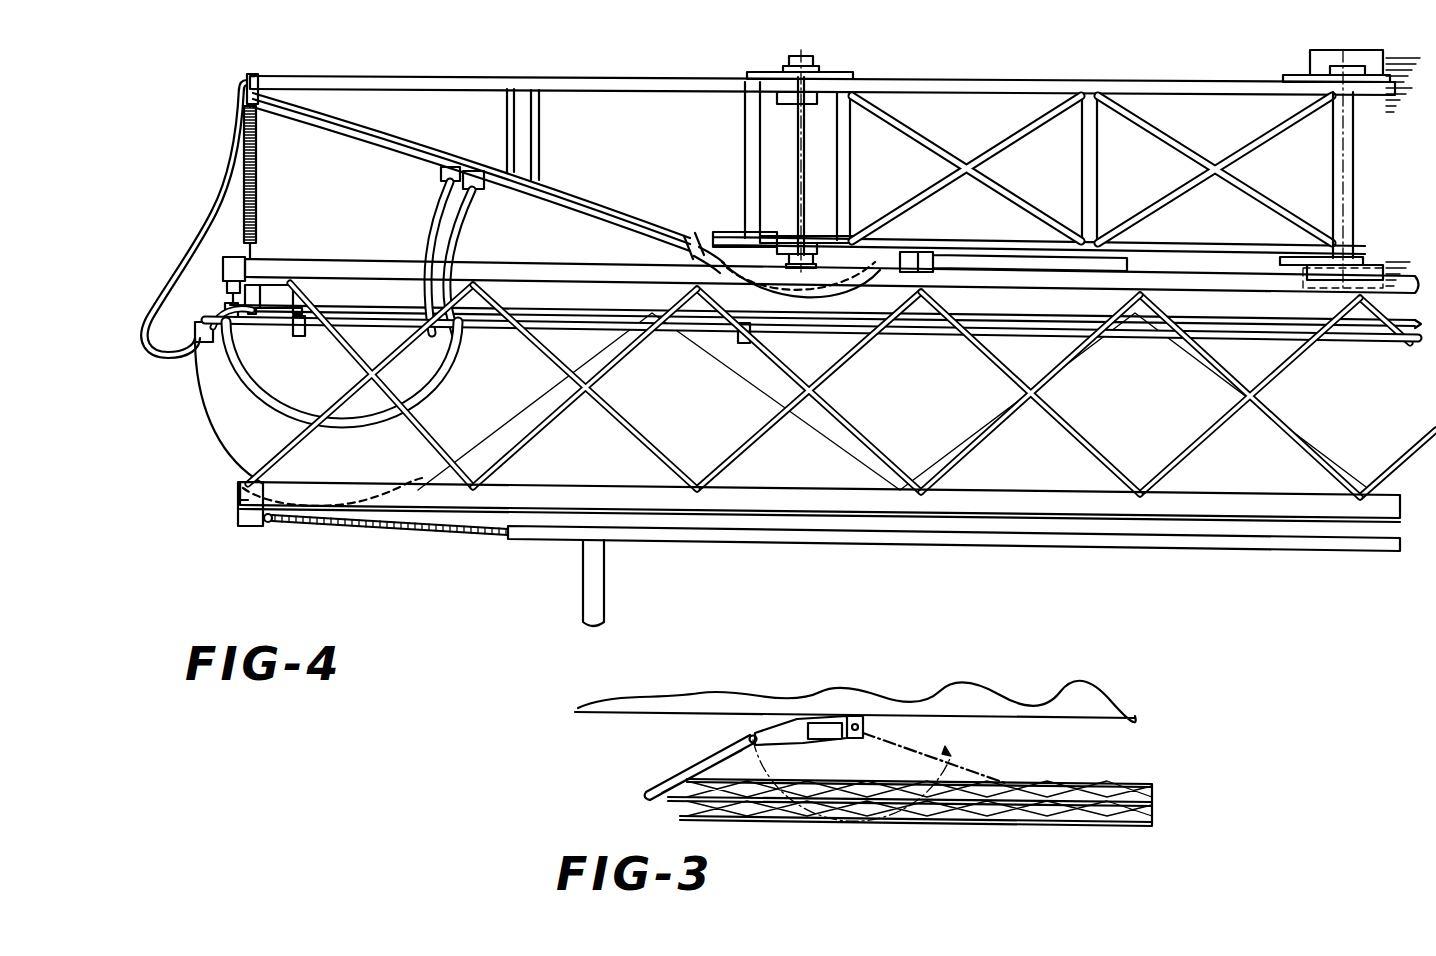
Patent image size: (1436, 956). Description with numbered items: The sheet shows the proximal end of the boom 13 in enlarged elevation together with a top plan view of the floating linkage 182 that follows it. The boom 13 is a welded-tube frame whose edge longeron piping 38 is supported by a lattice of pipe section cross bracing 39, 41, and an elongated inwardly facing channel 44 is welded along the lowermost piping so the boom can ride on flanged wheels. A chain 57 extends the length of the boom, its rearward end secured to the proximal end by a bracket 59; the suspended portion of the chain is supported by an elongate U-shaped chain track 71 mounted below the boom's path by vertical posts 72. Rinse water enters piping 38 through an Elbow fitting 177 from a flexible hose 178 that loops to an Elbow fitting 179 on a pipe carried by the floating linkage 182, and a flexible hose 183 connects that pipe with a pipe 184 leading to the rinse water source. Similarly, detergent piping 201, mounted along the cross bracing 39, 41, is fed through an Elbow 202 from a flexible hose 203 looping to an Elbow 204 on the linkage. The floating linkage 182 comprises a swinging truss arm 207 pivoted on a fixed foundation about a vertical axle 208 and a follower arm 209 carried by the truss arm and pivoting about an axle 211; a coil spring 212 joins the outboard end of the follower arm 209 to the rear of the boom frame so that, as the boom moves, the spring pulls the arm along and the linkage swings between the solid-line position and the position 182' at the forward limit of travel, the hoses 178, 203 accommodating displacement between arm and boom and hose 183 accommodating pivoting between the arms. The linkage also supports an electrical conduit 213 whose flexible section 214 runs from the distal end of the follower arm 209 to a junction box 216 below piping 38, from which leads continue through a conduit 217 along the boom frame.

In FIG. 4, the boom 13 is at (1360, 492).
In FIG. 3, the boom 13 is at (1058, 828).
In FIG. 4, the piping 38 is at (358, 240).
In FIG. 4, the pipe section cross bracing 39 is at (528, 430).
In FIG. 4, the pipe section cross bracing 41 is at (703, 440).
In FIG. 4, the elongated inwardly facing channel 44 is at (596, 468).
In FIG. 4, the chain 57 is at (415, 532).
In FIG. 4, the bracket 59 is at (256, 526).
In FIG. 4, the chain track 71 is at (1050, 546).
In FIG. 4, the vertical post 72 is at (597, 589).
In FIG. 4, the Elbow fitting 177 is at (221, 278).
In FIG. 4, the flexible hose 178 is at (276, 401).
In FIG. 4, the Elbow fitting 179 is at (482, 186).
In FIG. 4, the floating linkage 182 is at (556, 96).
In FIG. 3, the floating linkage 182 is at (754, 758).
In FIG. 3, the floating linkage position 182' is at (903, 777).
In FIG. 4, the flexible hose 183 is at (733, 206).
In FIG. 4, the pipe 184 is at (975, 220).
In FIG. 4, the piping 201 is at (684, 338).
In FIG. 4, the Elbow 202 is at (195, 322).
In FIG. 4, the flexible hose 203 is at (195, 400).
In FIG. 4, the Elbow 204 is at (447, 174).
In FIG. 4, the swinging truss arm 207 is at (1046, 52).
In FIG. 4, the axle 208 is at (1338, 174).
In FIG. 4, the follower arm 209 is at (390, 84).
In FIG. 4, the axle 211 is at (796, 134).
In FIG. 4, the coil spring 212 is at (259, 188).
In FIG. 4, the electrical conduit 213 is at (354, 133).
In FIG. 4, the flexible section 214 is at (204, 212).
In FIG. 4, the junction box 216 is at (292, 306).
In FIG. 4, the conduit 217 is at (594, 300).